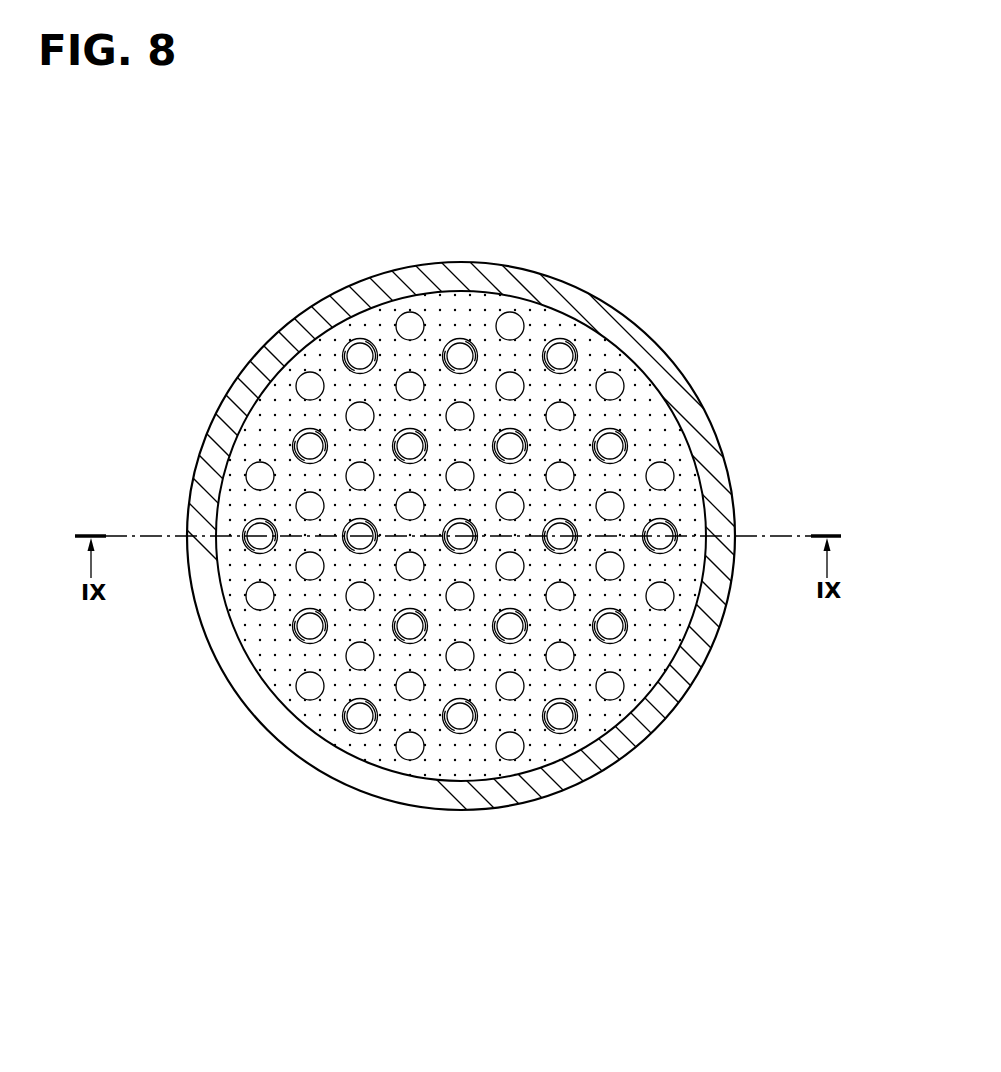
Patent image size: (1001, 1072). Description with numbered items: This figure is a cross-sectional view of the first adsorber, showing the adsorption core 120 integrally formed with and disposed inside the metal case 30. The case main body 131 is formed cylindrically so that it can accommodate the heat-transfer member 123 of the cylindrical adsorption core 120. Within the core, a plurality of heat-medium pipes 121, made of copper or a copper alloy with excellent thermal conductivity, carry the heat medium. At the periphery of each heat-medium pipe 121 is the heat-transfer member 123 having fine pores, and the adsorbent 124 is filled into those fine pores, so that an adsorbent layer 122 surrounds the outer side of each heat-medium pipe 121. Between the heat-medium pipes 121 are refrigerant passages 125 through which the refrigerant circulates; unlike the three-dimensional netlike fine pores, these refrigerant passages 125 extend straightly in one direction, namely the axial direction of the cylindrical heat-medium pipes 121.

The metal case 30 is at (649, 330).
The adsorption core 120 is at (450, 326).
The heat-medium pipe 121 is at (546, 338).
The adsorbent layer 122 is at (643, 667).
The heat-transfer member 123 is at (590, 727).
The adsorbent 124 is at (607, 705).
The refrigerant passage 125 is at (564, 465).
The case main body 131 is at (677, 393).